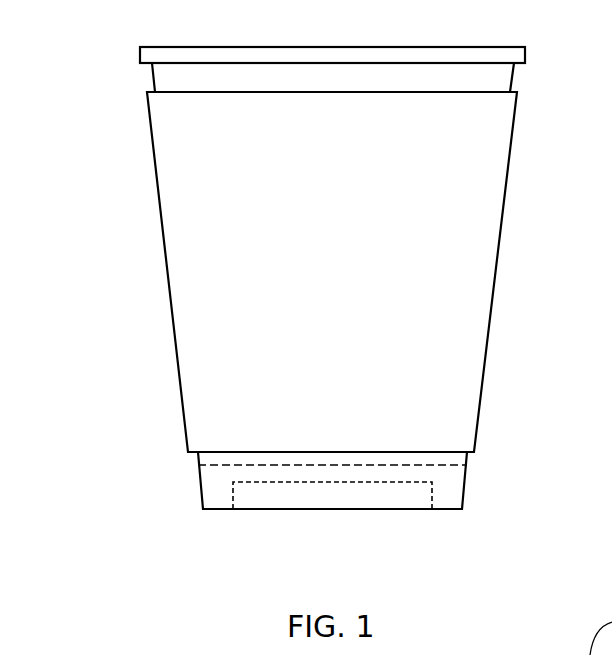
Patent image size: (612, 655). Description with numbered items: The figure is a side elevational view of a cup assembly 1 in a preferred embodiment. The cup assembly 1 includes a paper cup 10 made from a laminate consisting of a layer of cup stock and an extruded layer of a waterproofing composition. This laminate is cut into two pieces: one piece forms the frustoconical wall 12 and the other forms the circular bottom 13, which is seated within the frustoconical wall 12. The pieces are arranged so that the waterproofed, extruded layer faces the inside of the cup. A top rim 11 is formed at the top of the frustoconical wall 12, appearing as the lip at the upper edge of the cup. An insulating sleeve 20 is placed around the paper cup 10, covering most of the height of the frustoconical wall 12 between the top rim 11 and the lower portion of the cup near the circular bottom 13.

The cup assembly 1 is at (211, 537).
The paper cup 10 is at (403, 523).
The top rim 11 is at (141, 62).
The frustoconical wall 12 is at (467, 475).
The circular bottom 13 is at (463, 482).
The insulating sleeve 20 is at (167, 264).